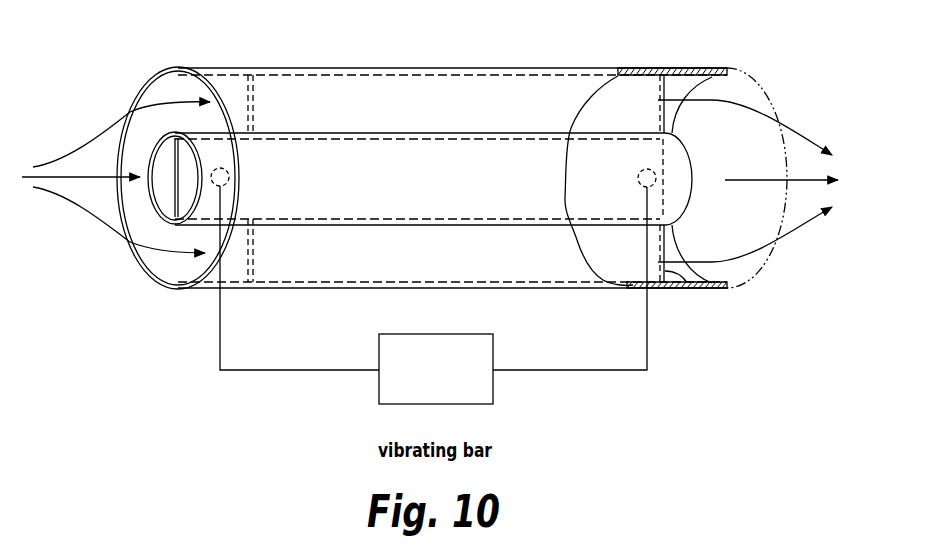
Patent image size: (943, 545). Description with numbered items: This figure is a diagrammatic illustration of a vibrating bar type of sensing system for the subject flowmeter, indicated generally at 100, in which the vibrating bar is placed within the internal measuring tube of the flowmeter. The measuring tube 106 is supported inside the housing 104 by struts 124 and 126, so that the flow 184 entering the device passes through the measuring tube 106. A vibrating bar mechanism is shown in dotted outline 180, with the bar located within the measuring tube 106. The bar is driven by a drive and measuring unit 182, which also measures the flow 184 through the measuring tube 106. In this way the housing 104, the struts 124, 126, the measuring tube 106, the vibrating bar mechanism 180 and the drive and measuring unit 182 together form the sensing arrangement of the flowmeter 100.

The vibrating bar flow device 100 is at (348, 58).
The housing 104 is at (457, 70).
The measuring tube 106 is at (457, 133).
The strut 124 is at (254, 116).
The strut 126 is at (254, 264).
The vibrating bar mechanism 180 is at (370, 135).
The drive and measuring unit 182 is at (473, 334).
The flow 184 is at (100, 176).